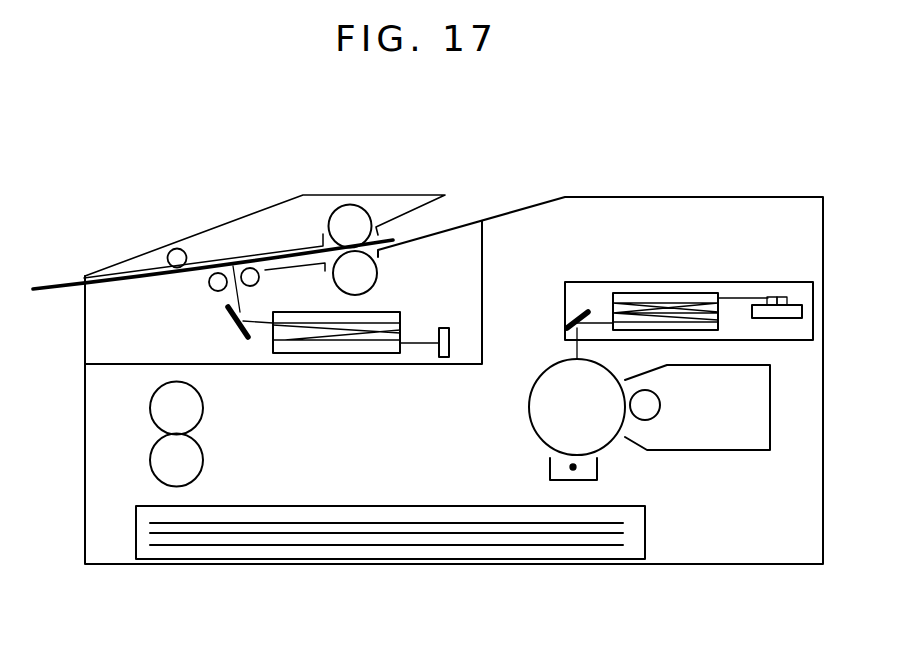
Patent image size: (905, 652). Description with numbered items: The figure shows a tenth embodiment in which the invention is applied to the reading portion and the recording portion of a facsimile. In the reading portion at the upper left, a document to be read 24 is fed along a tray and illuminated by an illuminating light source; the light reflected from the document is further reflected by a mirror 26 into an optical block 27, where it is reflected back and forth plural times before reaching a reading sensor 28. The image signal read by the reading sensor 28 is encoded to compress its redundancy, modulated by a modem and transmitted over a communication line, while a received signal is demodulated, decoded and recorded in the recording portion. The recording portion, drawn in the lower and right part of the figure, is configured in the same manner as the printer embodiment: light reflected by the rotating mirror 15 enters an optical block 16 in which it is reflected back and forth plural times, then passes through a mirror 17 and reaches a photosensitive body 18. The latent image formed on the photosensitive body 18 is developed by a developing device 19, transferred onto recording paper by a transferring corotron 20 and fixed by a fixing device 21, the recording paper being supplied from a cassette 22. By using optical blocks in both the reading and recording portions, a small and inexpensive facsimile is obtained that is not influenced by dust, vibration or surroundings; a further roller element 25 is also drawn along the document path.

The rotating mirror 15 is at (782, 297).
The optical block 16 is at (672, 293).
The mirror 17 is at (586, 313).
The photosensitive body 18 is at (612, 440).
The developing device 19 is at (753, 451).
The transferring corotron 20 is at (560, 481).
The fixing device 21 is at (158, 483).
The cassette 22 is at (325, 559).
The document to be read 24 is at (215, 266).
The document feed roller 25 is at (256, 266).
The mirror 26 is at (228, 326).
The optical block 27 is at (394, 311).
The reading sensor 28 is at (445, 328).